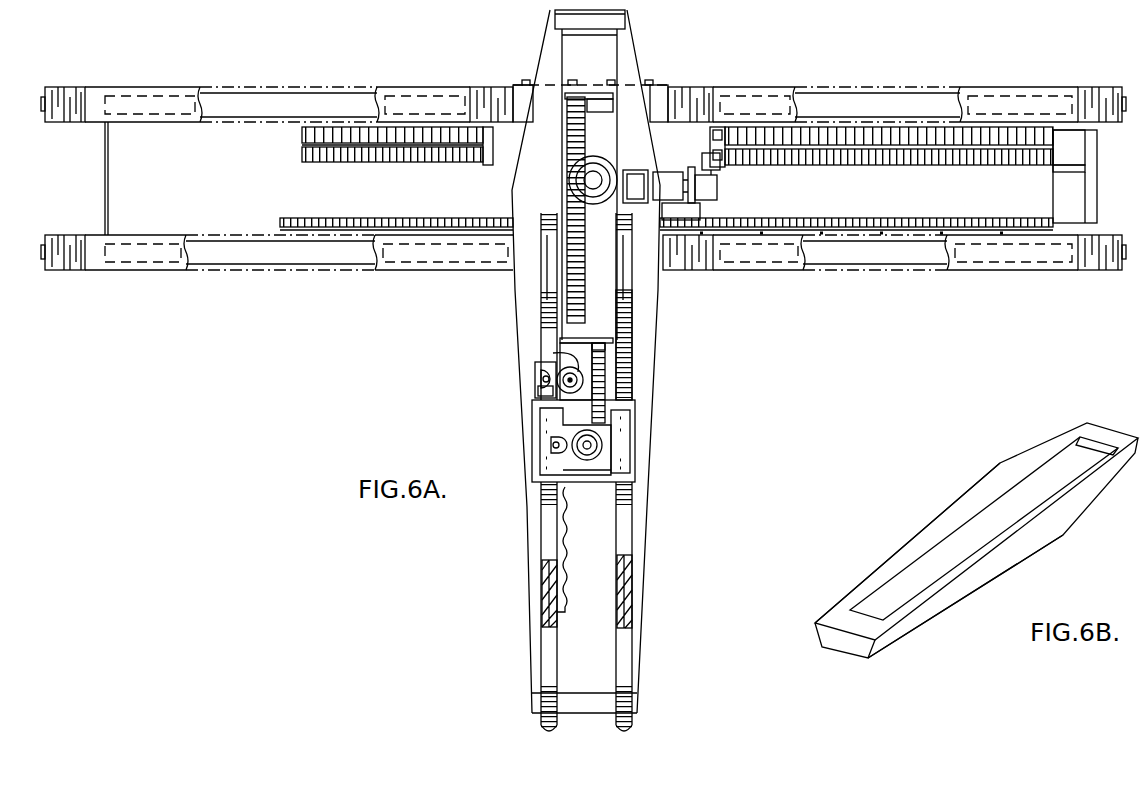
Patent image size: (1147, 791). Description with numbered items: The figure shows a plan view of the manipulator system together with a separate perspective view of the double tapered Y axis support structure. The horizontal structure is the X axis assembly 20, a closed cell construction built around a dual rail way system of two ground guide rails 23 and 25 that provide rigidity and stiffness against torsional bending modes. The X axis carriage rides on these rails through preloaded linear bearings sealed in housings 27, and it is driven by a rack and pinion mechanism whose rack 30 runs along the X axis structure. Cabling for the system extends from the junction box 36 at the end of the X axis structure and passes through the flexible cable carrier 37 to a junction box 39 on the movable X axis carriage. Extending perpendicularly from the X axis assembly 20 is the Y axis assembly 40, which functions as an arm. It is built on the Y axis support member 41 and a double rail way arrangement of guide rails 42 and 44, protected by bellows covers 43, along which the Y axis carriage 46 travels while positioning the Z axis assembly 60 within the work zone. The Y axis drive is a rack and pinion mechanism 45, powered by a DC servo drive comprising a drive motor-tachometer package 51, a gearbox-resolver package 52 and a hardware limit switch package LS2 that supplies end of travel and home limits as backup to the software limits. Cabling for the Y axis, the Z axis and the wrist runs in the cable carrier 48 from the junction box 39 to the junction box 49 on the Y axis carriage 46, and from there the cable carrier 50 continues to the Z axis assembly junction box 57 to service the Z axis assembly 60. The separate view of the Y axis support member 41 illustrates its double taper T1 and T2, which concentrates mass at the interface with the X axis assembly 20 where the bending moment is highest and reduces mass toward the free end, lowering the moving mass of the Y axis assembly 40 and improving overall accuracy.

In FIG. 6A, the X axis assembly 20 is at (701, 65).
In FIG. 6A, the guide rail 23 is at (860, 107).
In FIG. 6A, the guide rail 25 is at (900, 256).
In FIG. 6A, the housing 27 is at (1070, 97).
In FIG. 6A, the rack 30 is at (877, 218).
In FIG. 6A, the junction box 36 is at (1085, 198).
In FIG. 6A, the flexible cable carrier 37 is at (410, 158).
In FIG. 6A, the junction box 39 is at (596, 108).
In FIG. 6A, the Y axis assembly 40 is at (562, 374).
In FIG. 6A, the Y axis support member 41 is at (655, 392).
In FIG. 6B, the Y axis support member 41 is at (1040, 536).
In FIG. 6A, the guide rail 42 is at (625, 588).
In FIG. 6A, the bellows cover 43 is at (550, 545).
In FIG. 6A, the guide rail 44 is at (545, 600).
In FIG. 6A, the rack and pinion mechanism 45 is at (570, 490).
In FIG. 6A, the Y axis carriage 46 is at (540, 440).
In FIG. 6A, the cable carrier 48 is at (577, 223).
In FIG. 6A, the junction box 49 is at (563, 339).
In FIG. 6A, the cable carrier 50 is at (605, 362).
In FIG. 6A, the drive motor-tachometer package 51 is at (553, 361).
In FIG. 6A, the gearbox-resolver package 52 is at (540, 378).
In FIG. 6A, the Z axis assembly junction box 57 is at (612, 437).
In FIG. 6A, the Z axis assembly 60 is at (618, 447).
In FIG. 6A, the hardware limit switch package LS2 is at (553, 396).
In FIG. 6B, the taper T1 is at (915, 626).
In FIG. 6B, the taper T2 is at (920, 531).